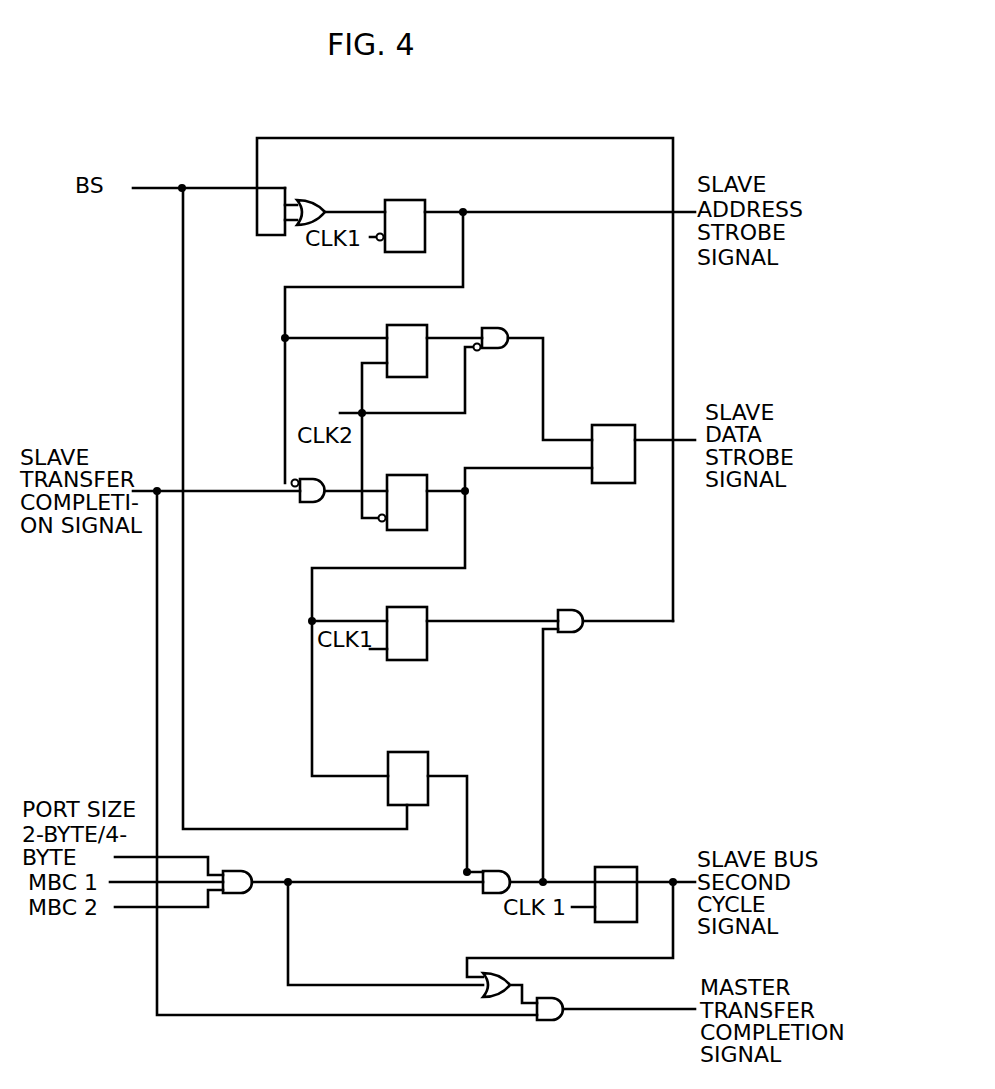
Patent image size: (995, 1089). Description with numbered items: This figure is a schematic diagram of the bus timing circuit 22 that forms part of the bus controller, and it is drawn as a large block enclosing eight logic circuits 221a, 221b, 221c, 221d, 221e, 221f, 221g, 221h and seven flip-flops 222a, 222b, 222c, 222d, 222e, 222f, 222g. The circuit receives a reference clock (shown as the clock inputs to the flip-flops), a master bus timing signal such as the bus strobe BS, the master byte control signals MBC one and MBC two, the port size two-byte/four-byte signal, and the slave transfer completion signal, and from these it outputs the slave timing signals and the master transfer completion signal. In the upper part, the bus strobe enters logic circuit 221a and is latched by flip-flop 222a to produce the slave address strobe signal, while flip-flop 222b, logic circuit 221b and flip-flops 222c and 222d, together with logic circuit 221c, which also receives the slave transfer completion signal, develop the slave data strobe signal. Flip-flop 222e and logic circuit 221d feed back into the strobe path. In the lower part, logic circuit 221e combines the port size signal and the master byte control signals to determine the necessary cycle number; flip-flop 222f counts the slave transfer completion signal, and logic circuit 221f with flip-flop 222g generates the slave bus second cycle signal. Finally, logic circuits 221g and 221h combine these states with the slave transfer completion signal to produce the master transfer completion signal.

The bus timing circuit 22 is at (680, 146).
The logic circuit 221a is at (342, 168).
The logic circuit 221b is at (502, 325).
The logic circuit 221c is at (303, 505).
The logic circuit 221d is at (582, 610).
The logic circuit 221e is at (250, 870).
The logic circuit 221f is at (492, 867).
The logic circuit 221g is at (512, 975).
The logic circuit 221h is at (547, 1022).
The flip-flop 222a is at (407, 202).
The flip-flop 222b is at (403, 325).
The flip-flop 222c is at (437, 452).
The flip-flop 222d is at (617, 423).
The flip-flop 222e is at (423, 605).
The flip-flop 222f is at (420, 750).
The flip-flop 222g is at (617, 865).